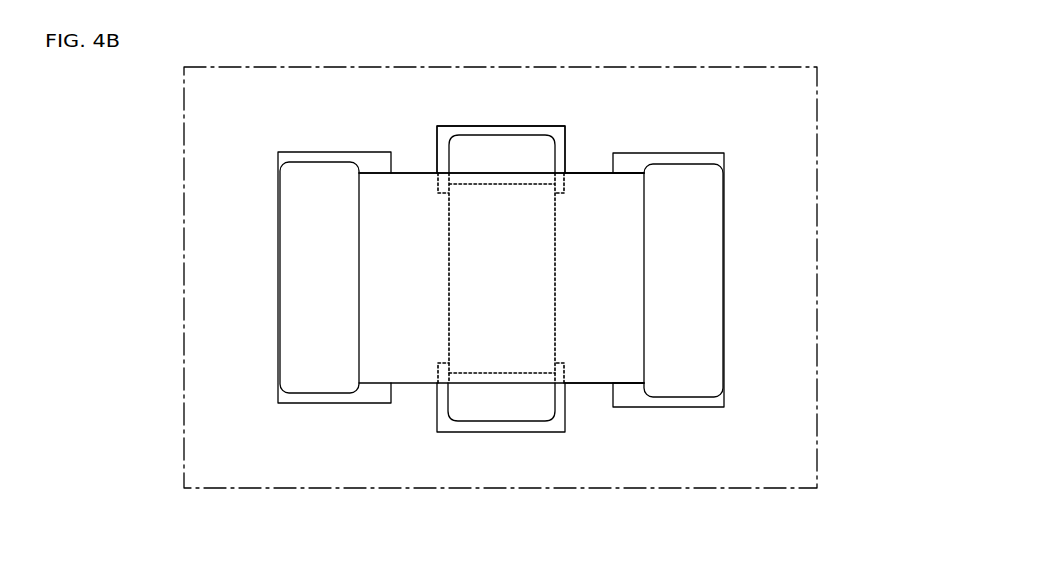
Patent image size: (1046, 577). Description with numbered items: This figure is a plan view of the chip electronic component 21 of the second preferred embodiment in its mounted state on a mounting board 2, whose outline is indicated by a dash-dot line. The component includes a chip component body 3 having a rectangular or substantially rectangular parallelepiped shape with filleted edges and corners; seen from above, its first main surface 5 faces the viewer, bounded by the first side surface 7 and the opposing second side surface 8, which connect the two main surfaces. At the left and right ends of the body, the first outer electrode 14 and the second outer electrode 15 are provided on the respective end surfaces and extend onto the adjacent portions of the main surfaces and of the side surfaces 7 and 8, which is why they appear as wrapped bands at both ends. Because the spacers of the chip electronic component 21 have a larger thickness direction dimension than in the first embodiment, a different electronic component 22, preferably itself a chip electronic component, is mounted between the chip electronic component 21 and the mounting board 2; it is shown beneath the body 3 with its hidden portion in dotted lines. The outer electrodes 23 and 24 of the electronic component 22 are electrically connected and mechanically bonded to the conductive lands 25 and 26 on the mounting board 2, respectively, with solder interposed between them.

The mounting board 2 is at (813, 97).
The chip component body 3 is at (411, 172).
The first main surface 5 is at (603, 177).
The first side surface 7 is at (587, 173).
The second side surface 8 is at (588, 386).
The first outer electrode 14 is at (302, 167).
The second outer electrode 15 is at (677, 170).
The chip electronic component 21 is at (726, 232).
The different electronic component 22 is at (518, 130).
The outer electrode 23 is at (469, 145).
The outer electrode 24 is at (502, 415).
The conductive land 25 is at (552, 127).
The conductive land 26 is at (443, 424).